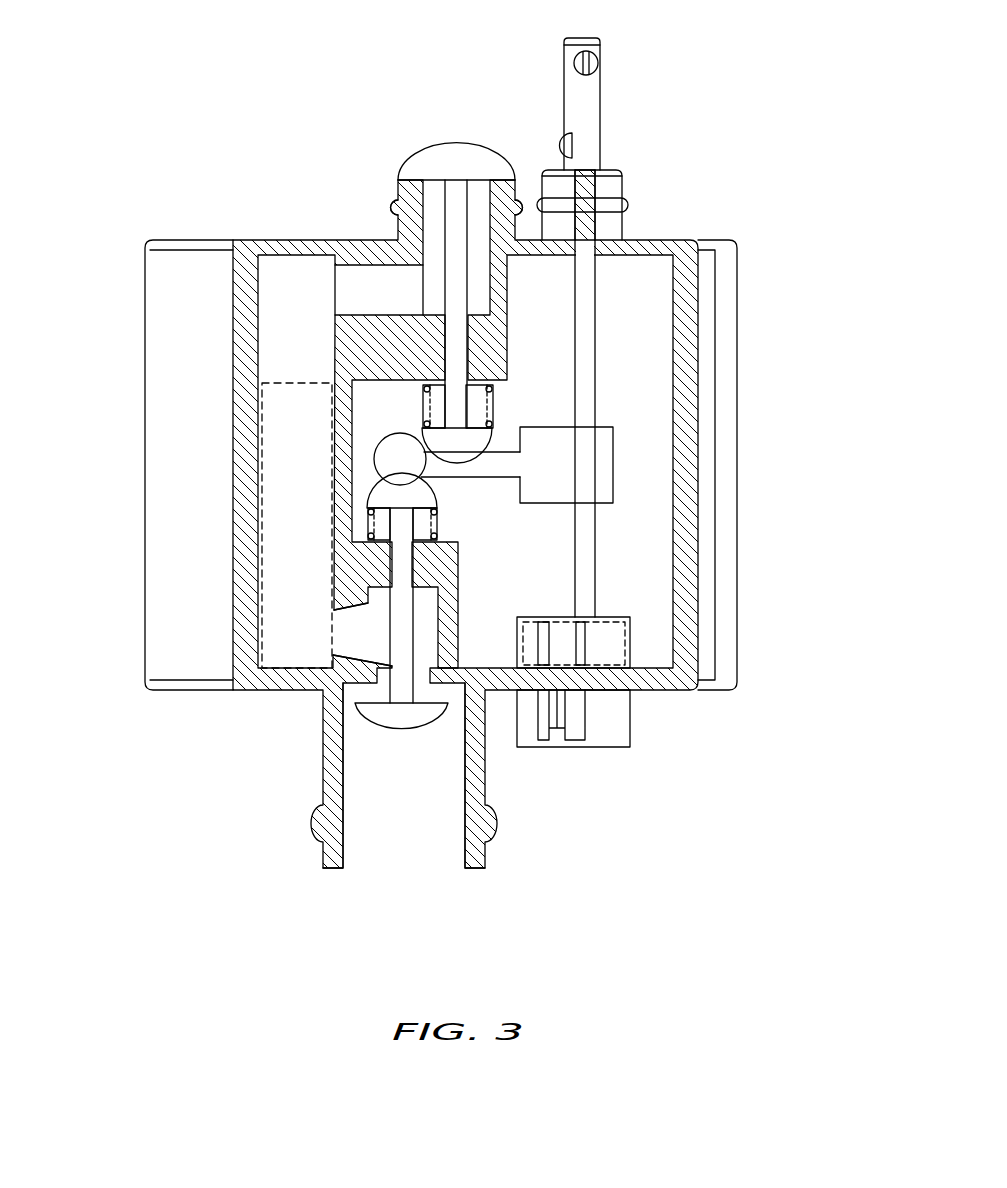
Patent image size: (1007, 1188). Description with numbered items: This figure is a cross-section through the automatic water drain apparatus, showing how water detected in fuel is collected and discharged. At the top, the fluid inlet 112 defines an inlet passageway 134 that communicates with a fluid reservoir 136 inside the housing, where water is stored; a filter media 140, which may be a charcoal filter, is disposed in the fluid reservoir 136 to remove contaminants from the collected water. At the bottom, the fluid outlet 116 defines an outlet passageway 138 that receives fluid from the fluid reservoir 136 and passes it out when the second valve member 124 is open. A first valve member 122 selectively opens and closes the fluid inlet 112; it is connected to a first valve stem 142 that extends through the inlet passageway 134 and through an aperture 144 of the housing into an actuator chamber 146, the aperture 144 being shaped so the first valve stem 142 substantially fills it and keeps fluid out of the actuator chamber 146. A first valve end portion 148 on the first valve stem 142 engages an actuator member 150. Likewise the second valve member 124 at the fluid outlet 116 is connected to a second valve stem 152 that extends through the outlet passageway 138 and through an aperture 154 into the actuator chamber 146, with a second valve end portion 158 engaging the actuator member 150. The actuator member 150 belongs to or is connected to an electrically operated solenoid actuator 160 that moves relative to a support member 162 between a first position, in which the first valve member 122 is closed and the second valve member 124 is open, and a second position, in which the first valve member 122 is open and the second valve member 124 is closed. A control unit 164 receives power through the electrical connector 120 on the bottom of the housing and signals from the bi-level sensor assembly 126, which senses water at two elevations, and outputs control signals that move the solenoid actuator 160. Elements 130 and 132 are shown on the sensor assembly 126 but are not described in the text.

The fluid inlet 112 is at (400, 186).
The fluid outlet 116 is at (323, 753).
The electrical connector 120 is at (605, 748).
The first valve member 122 is at (450, 147).
The second valve member 124 is at (403, 735).
The sensor assembly 126 is at (602, 103).
The detent 130 is at (570, 138).
The screw 132 is at (600, 52).
The inlet passageway 134 is at (379, 290).
The fluid reservoir 136 is at (282, 283).
The outlet passageway 138 is at (362, 634).
The filter media 140 is at (258, 422).
The first valve stem 142 is at (467, 222).
The aperture 144 is at (468, 340).
The actuator chamber 146 is at (468, 605).
The first valve end portion 148 is at (493, 433).
The actuator member 150 is at (383, 437).
The second valve stem 152 is at (413, 622).
The aperture 154 is at (390, 553).
The second valve end portion 158 is at (430, 493).
The solenoid actuator 160 is at (615, 460).
The support member 162 is at (597, 372).
The control unit 164 is at (624, 617).